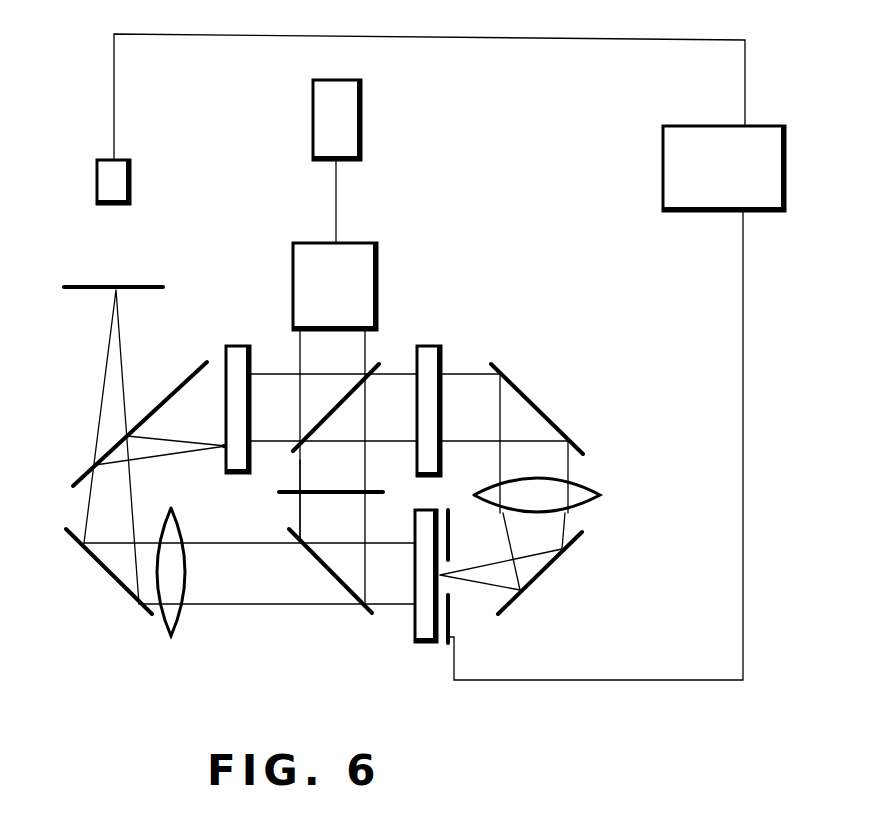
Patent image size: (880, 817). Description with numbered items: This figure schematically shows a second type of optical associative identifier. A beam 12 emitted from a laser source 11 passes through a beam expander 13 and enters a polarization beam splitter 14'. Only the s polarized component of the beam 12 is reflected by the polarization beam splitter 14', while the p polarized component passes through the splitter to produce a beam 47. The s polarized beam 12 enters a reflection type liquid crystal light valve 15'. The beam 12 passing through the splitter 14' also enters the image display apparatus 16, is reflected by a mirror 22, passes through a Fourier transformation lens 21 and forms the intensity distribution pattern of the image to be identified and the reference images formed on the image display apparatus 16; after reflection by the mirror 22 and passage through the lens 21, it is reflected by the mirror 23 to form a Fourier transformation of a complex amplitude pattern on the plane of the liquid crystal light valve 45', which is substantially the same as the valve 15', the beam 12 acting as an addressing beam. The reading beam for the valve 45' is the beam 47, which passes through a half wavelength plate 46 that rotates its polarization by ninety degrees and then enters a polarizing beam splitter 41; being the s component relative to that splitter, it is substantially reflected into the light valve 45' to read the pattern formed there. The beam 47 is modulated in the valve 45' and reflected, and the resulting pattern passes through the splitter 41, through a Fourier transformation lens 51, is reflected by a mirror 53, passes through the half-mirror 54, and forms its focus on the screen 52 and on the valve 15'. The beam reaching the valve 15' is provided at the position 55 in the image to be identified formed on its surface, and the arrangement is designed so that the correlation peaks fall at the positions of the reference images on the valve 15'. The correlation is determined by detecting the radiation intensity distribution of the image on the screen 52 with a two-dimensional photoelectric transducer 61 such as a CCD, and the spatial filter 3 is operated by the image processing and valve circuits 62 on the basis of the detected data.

The laser source 11 is at (361, 80).
The beam 12 is at (336, 197).
The beam expander 13 is at (335, 286).
The polarization beam splitter 14' is at (369, 357).
The reflection type liquid crystal light valve 15' is at (226, 368).
The image display apparatus 16 is at (442, 347).
The Fourier transformation lens 21 is at (590, 494).
The mirror 22 is at (545, 418).
The mirror 23 is at (572, 547).
The spatial filter 3 is at (450, 617).
The polarizing beam splitter 41 is at (370, 612).
The liquid crystal light valve 45' is at (435, 622).
The half wavelength plate 46 is at (283, 494).
The beam 47 is at (300, 470).
The Fourier transformation lens 51 is at (180, 613).
The screen 52 is at (77, 285).
The mirror 53 is at (102, 567).
The half-mirror 54 is at (73, 484).
The position 55 is at (223, 446).
The two-dimensional photoelectric transducer 61 is at (97, 160).
The image processing and valve circuits 62 is at (724, 168).